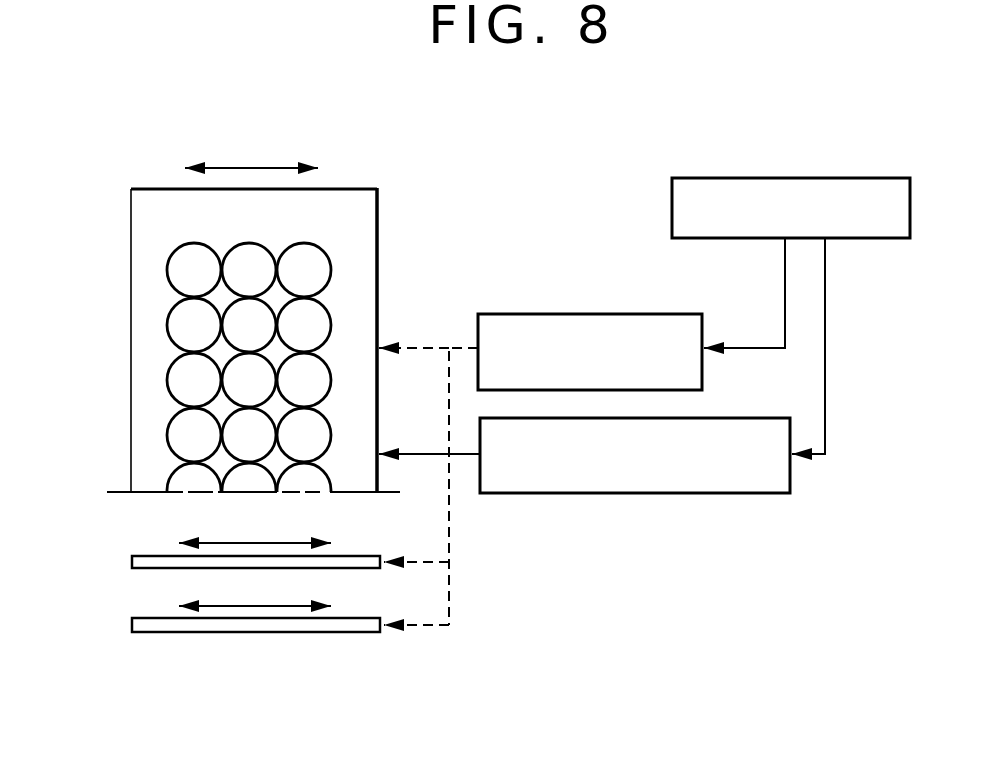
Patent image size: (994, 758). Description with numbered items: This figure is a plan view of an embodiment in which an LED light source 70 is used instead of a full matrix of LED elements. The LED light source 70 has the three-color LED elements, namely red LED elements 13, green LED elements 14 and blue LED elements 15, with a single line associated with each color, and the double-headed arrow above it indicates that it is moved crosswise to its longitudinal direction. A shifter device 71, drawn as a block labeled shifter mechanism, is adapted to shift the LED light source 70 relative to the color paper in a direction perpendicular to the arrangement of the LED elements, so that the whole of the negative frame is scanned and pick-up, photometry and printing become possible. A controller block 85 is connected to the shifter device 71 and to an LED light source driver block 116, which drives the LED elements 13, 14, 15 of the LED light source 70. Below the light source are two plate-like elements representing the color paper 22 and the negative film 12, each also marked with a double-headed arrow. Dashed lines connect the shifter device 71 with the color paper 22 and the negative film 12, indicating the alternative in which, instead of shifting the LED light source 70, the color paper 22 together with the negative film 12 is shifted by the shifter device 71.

The LED light source 70 is at (349, 186).
The red LED elements 13 is at (176, 271).
The green LED elements 14 is at (231, 251).
The blue LED elements 15 is at (322, 272).
The controller 85 is at (672, 200).
The shifter device 71 is at (567, 314).
The LED light source driver 116 is at (620, 494).
The color paper 22 is at (131, 559).
The negative film 12 is at (163, 633).